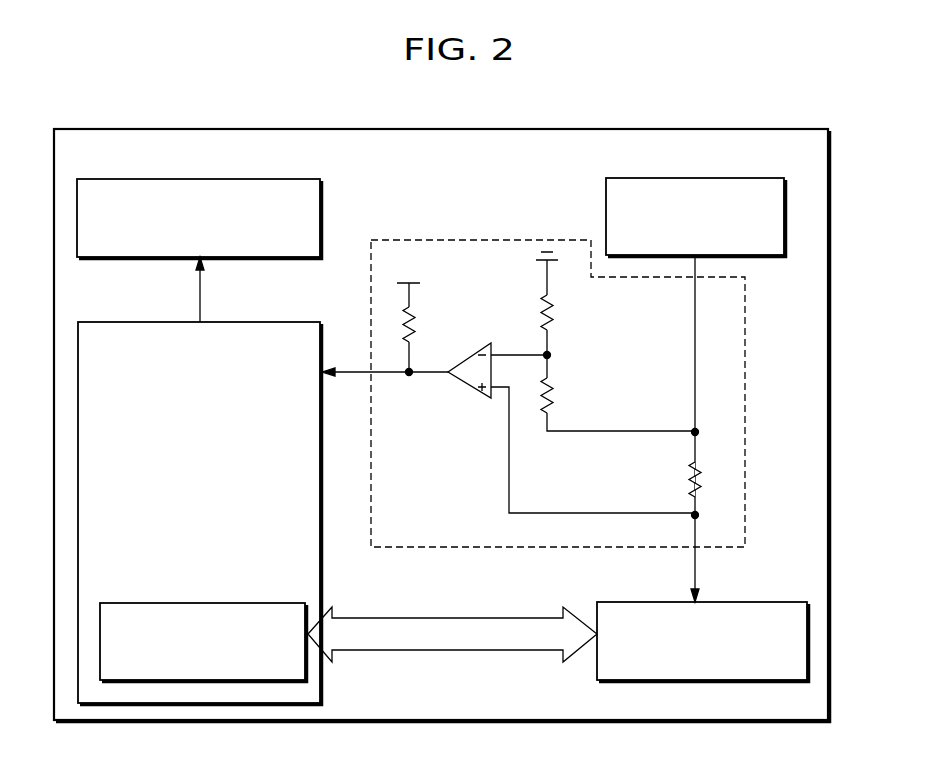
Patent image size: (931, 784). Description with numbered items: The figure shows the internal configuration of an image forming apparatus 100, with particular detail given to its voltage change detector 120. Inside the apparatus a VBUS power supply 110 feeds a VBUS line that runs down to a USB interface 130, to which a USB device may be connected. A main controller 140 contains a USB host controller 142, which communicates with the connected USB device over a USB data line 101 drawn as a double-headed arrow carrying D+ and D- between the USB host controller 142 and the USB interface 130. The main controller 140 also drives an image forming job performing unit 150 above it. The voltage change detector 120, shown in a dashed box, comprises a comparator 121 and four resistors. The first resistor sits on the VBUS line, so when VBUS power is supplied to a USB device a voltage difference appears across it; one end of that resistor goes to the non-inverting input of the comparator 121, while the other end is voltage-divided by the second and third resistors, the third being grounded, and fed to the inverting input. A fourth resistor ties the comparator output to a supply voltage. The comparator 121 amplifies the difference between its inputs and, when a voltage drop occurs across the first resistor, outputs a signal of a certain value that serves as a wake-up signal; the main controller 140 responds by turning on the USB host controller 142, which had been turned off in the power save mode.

The image forming apparatus 100 is at (606, 128).
The USB data line 101 is at (487, 652).
The VBUS power supply 110 is at (740, 177).
The voltage change detector 120 is at (480, 240).
The comparator 121 is at (470, 392).
The USB interface 130 is at (752, 602).
The main controller 140 is at (258, 321).
The USB host controller 142 is at (203, 602).
The image forming job performing unit 150 is at (258, 178).